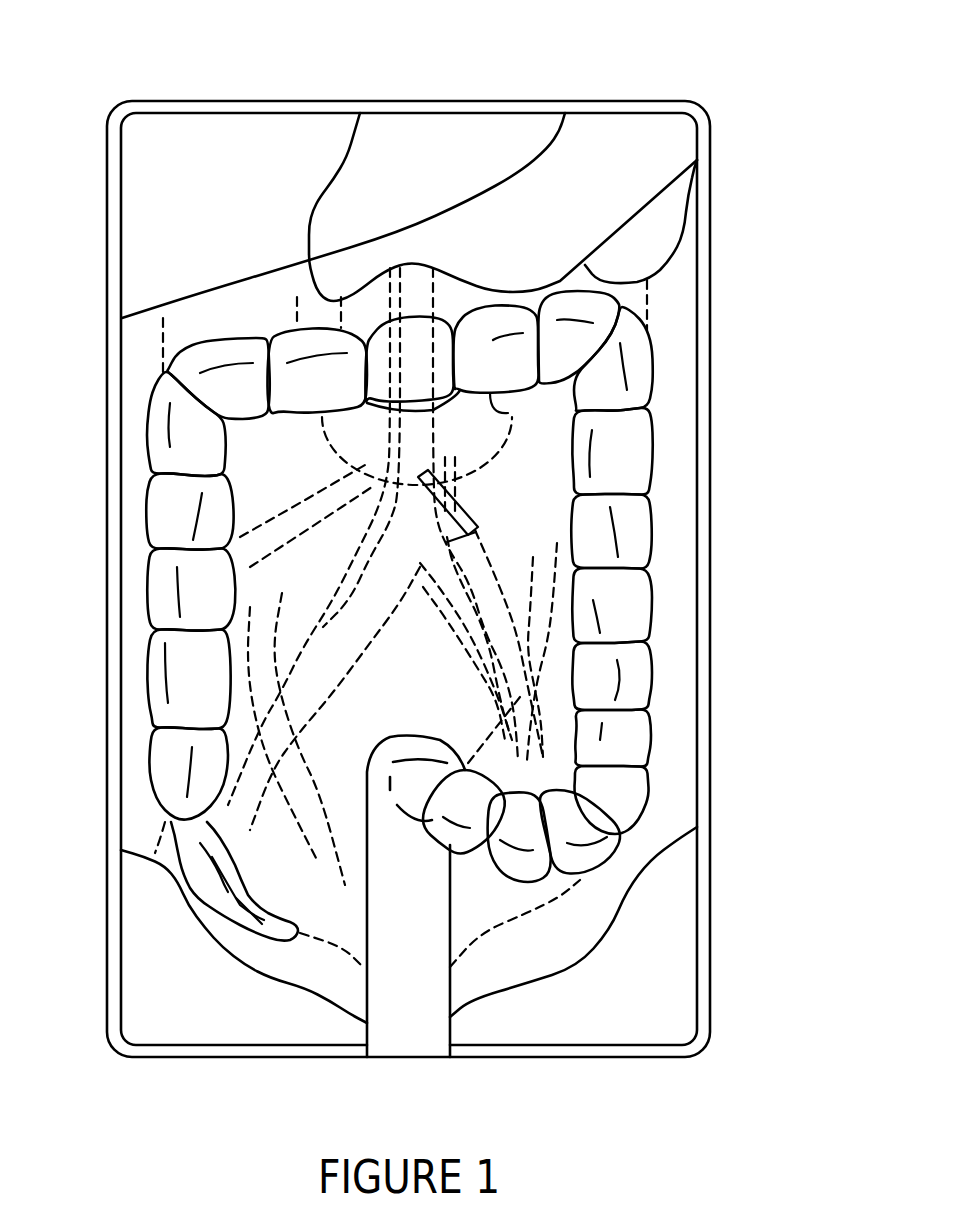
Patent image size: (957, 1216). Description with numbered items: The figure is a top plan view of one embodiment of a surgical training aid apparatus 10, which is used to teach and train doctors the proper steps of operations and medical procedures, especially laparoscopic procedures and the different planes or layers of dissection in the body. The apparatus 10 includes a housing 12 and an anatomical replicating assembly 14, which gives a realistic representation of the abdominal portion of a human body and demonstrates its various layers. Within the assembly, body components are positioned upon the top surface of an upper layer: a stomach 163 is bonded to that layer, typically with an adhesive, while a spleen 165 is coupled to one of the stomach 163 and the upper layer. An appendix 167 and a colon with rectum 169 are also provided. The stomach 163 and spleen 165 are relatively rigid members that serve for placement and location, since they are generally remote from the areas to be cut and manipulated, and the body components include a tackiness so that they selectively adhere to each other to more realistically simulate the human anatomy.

The surgical training aid apparatus 10 is at (798, 568).
The housing 12 is at (711, 705).
The anatomical replicating assembly 14 is at (680, 820).
The stomach 163 is at (633, 136).
The spleen 165 is at (663, 235).
The appendix 167 is at (180, 853).
The colon with rectum 169 is at (157, 681).